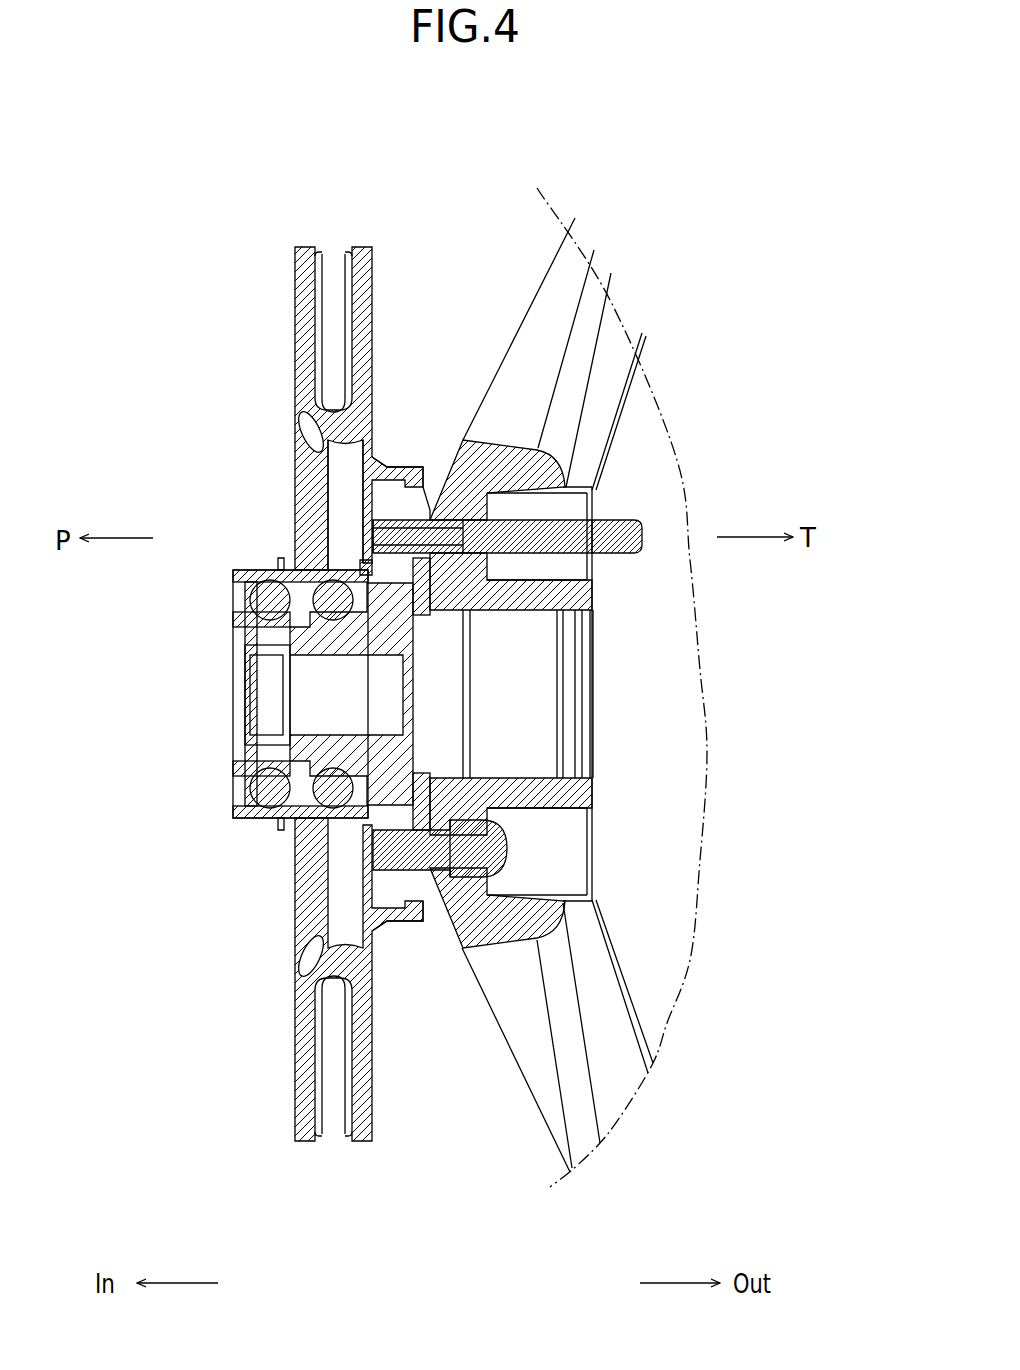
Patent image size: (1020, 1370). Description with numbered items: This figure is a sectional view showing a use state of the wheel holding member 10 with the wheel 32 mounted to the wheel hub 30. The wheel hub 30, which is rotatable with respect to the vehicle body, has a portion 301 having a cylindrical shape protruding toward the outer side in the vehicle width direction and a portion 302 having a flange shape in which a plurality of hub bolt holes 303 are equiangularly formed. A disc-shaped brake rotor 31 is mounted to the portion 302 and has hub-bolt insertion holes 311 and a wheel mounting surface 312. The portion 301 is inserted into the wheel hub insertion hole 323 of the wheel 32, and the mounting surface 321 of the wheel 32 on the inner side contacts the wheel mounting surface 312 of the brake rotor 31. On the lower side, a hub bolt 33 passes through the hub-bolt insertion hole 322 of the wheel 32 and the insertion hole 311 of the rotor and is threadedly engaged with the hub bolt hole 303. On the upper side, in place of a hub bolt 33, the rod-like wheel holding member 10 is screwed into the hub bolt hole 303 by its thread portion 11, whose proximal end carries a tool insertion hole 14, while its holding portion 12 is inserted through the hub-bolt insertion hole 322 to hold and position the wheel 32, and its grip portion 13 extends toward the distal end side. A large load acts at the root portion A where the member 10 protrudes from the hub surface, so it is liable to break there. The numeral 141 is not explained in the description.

The wheel holding member 10 is at (592, 696).
The thread portion 11 is at (380, 555).
The holding portion 12 is at (455, 490).
The grip portion 13 is at (647, 522).
The tool insertion hole 14 is at (373, 530).
The bolt flange 141 is at (580, 590).
The wheel hub 30 is at (268, 690).
The portion having a cylindrical shape 301 is at (565, 655).
The portion having a flange shape 302 is at (375, 548).
The hub bolt hole 303 is at (360, 545).
The brake rotor 31 is at (294, 372).
The hub-bolt insertion hole 311 is at (420, 545).
The wheel mounting surface 312 is at (447, 505).
The wheel 32 is at (552, 288).
The mounting surface 321 is at (414, 905).
The hub-bolt insertion hole 322 is at (537, 452).
The wheel hub insertion hole 323 is at (493, 683).
The hub bolt 33 is at (372, 858).
The root portion A is at (370, 540).